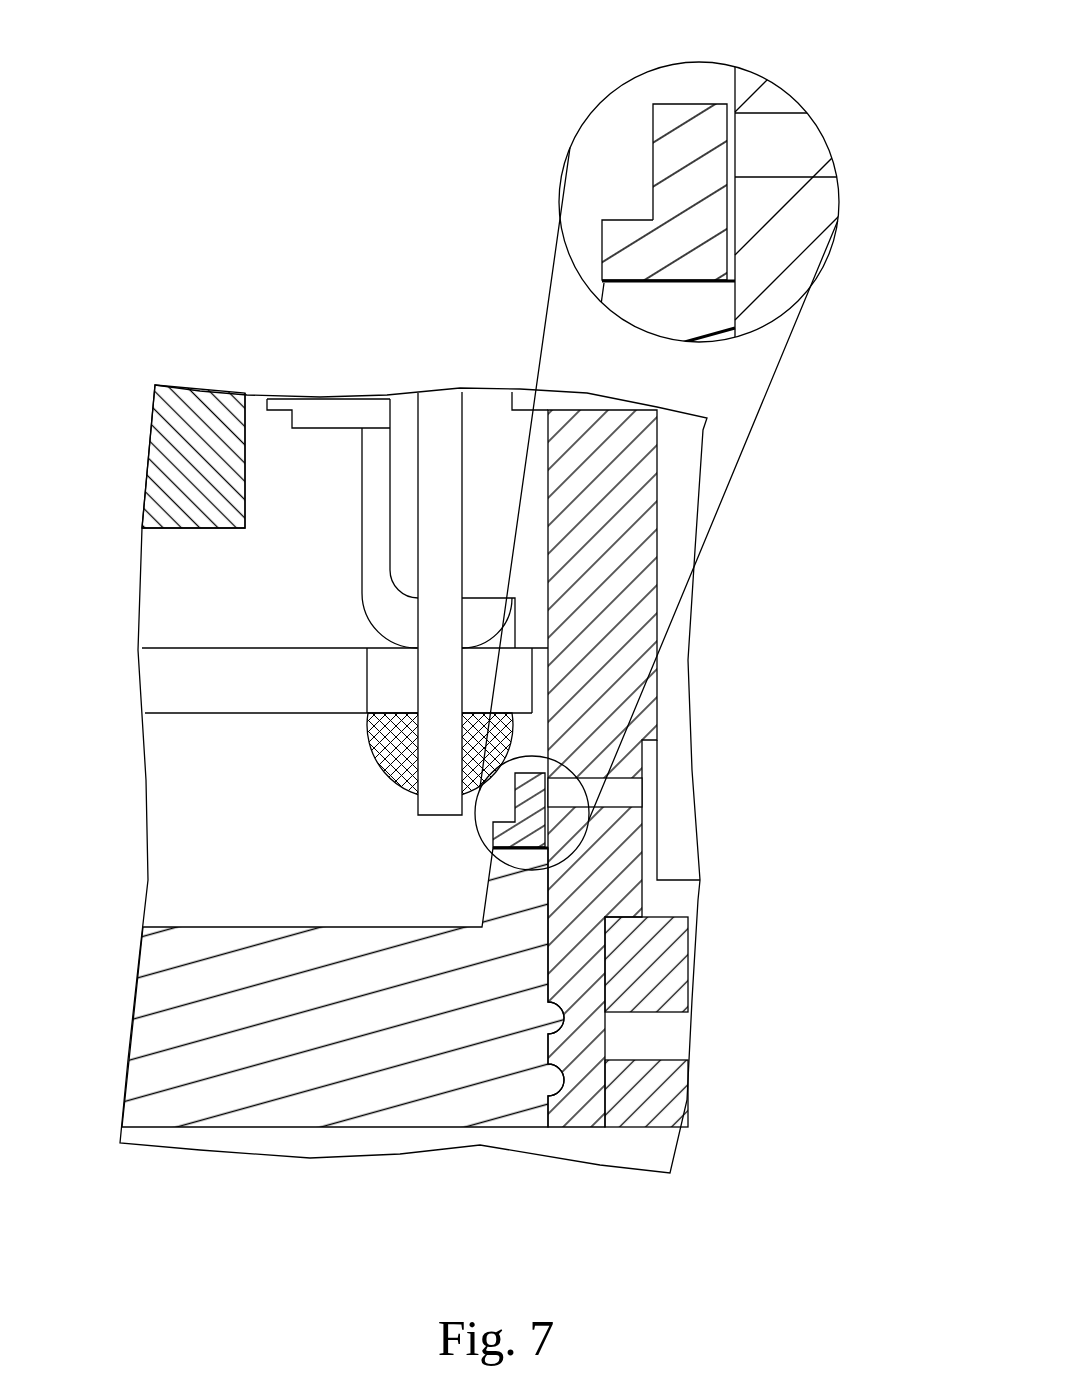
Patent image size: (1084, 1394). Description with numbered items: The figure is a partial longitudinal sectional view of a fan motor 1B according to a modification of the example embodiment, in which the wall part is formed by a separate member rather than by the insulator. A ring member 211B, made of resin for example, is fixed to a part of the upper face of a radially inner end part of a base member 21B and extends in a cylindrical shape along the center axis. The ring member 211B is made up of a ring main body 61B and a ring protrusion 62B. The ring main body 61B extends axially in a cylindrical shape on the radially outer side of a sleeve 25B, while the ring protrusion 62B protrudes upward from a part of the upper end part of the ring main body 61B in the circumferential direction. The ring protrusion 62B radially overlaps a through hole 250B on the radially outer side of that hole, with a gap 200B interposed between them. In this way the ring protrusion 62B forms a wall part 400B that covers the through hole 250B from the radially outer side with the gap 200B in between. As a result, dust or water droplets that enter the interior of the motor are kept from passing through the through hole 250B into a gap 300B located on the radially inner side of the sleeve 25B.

The fan motor 1B is at (317, 352).
The base member 21B is at (263, 1085).
The sleeve 25B is at (577, 1080).
The ring main body 61B is at (610, 248).
The ring protrusion 62B is at (670, 163).
The ring member 211B is at (602, 57).
The gap 200B is at (740, 207).
The through hole 250B is at (622, 792).
The gap 300B is at (683, 897).
The wall part 400B is at (692, 147).